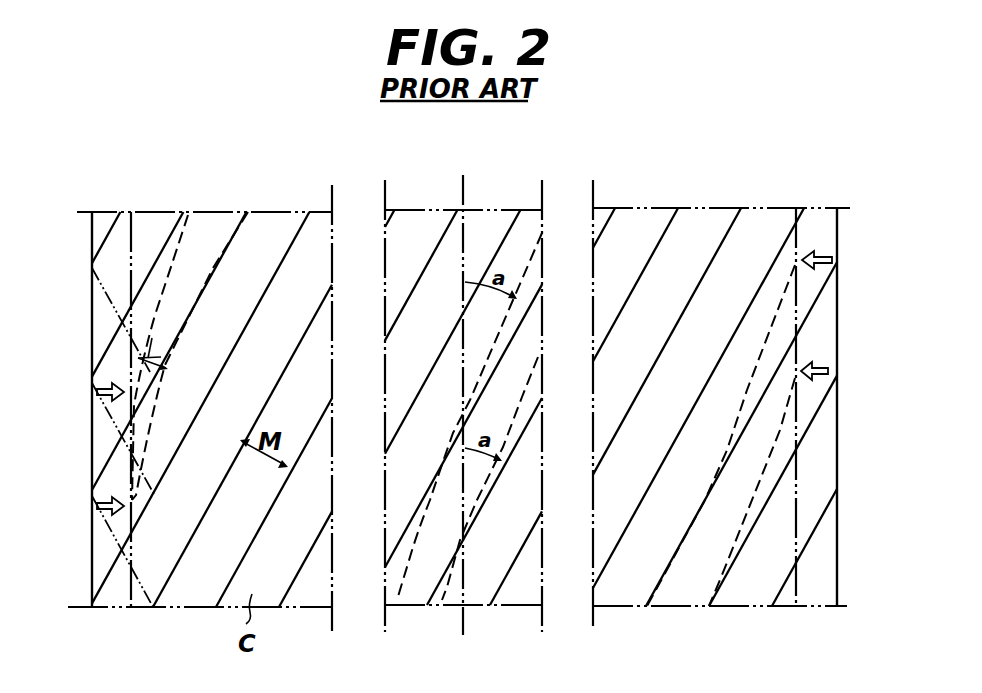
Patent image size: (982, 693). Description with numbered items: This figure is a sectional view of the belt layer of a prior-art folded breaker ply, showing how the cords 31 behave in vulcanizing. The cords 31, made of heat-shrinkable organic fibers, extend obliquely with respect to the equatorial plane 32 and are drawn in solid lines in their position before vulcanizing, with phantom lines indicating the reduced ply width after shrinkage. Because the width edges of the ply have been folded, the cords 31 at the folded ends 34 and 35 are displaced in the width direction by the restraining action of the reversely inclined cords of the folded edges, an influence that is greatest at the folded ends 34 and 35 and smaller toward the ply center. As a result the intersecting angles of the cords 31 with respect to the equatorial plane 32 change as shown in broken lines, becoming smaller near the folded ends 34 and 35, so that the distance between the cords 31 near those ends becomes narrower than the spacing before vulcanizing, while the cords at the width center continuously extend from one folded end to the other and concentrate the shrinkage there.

The cords 31 is at (188, 232).
The equatorial plane 32 is at (463, 190).
The folded end 34 is at (92, 448).
The folded end 35 is at (838, 438).